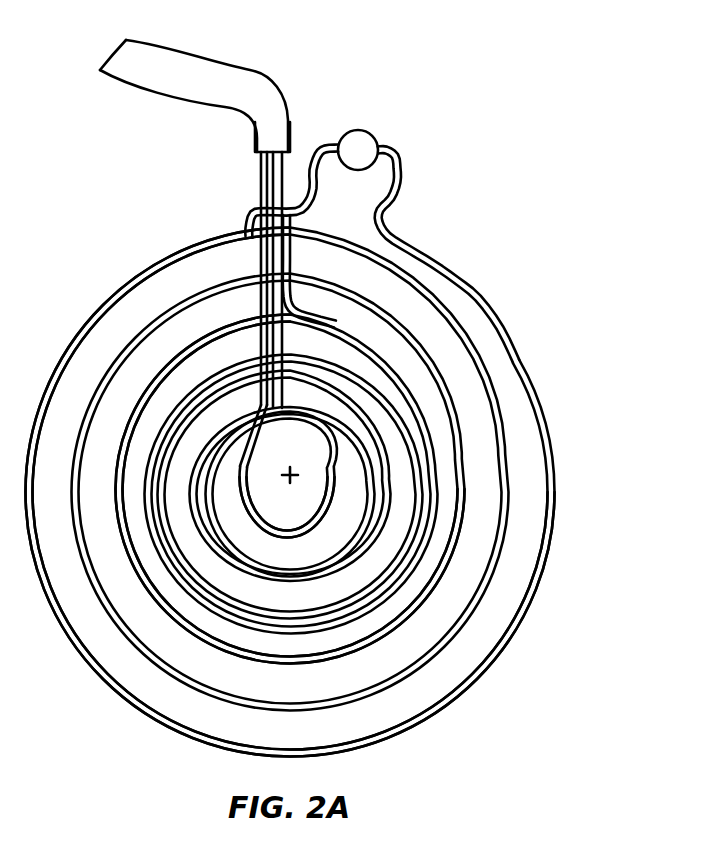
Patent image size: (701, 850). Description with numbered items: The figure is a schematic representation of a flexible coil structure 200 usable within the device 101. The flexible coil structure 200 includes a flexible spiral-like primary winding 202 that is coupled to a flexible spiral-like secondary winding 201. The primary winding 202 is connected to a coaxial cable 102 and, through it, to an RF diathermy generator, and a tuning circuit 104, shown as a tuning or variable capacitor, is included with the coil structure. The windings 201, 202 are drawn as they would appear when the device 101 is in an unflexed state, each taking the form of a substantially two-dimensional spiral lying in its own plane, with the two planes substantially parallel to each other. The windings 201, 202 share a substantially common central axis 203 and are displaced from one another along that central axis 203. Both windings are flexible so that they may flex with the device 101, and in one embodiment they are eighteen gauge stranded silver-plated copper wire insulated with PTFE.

The flexible coil structure 200 is at (330, 396).
The device 101 is at (495, 286).
The coaxial cable 102 is at (230, 72).
The tuning circuit 104 is at (363, 130).
The secondary winding 201 is at (137, 270).
The primary winding 202 is at (425, 414).
The central axis 203 is at (298, 474).